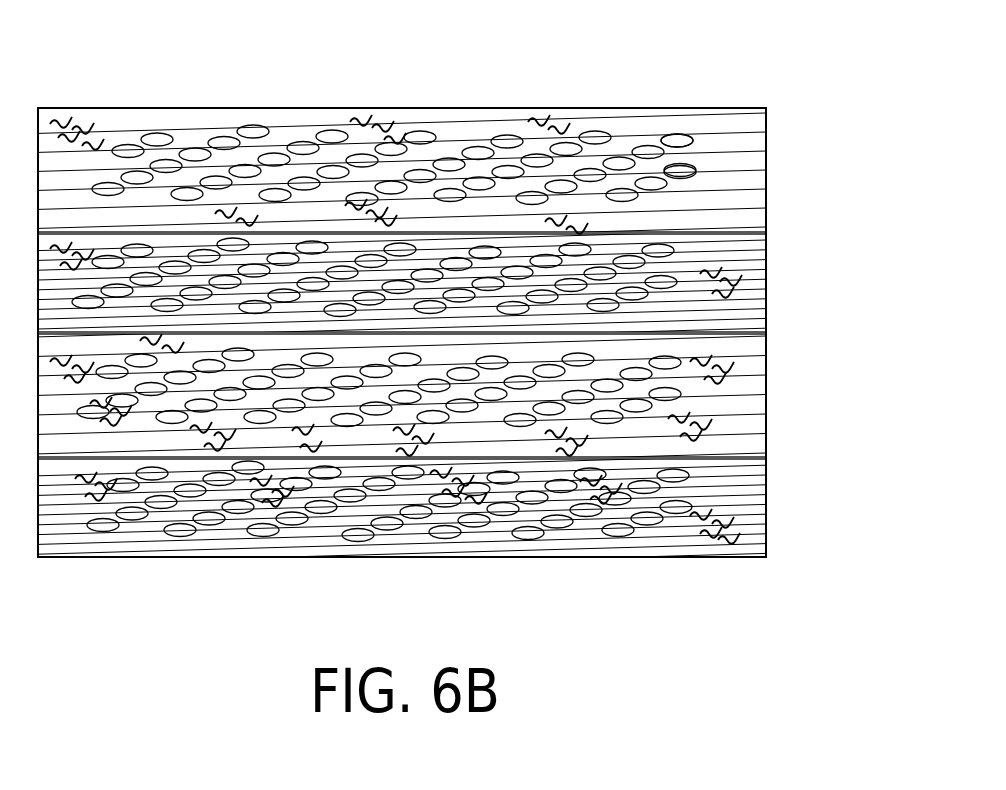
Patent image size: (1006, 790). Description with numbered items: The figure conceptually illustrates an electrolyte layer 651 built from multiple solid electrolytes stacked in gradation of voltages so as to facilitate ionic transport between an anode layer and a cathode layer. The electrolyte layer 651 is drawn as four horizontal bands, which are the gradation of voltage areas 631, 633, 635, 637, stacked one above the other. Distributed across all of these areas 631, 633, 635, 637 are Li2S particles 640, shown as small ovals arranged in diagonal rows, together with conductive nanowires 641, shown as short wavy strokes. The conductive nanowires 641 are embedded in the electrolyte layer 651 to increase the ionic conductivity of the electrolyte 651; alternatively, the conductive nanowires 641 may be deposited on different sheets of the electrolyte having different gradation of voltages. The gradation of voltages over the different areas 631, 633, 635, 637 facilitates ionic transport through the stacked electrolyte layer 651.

The voltage gradation area 631 is at (767, 487).
The voltage gradation area 633 is at (767, 380).
The voltage gradation area 635 is at (767, 280).
The voltage gradation area 637 is at (767, 172).
The Li2S particles 640 is at (690, 168).
The conductive nanowires 641 is at (542, 122).
The electrolyte layer 651 is at (900, 109).